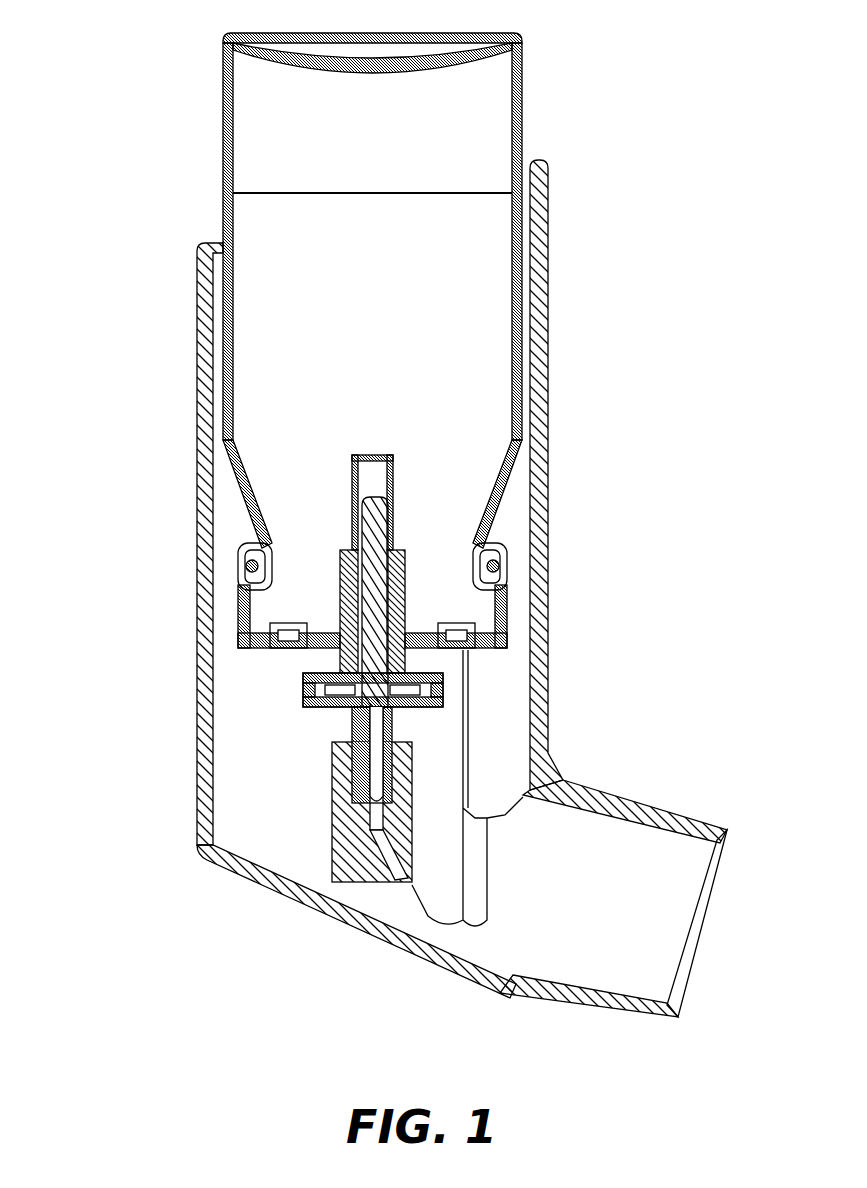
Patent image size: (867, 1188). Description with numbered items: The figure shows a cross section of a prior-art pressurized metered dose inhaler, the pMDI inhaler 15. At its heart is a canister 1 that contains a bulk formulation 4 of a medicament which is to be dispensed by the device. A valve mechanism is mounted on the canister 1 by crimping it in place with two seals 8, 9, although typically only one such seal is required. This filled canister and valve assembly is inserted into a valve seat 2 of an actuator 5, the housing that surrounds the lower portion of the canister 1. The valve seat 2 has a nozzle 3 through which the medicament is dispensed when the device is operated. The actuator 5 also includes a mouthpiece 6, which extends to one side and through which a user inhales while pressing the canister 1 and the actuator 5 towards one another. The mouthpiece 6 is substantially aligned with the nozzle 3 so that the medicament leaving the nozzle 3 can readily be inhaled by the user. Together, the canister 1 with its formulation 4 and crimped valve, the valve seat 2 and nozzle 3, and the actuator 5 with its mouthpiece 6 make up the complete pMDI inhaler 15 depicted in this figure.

The pMDI inhaler 15 is at (398, 525).
The canister 1 is at (225, 328).
The valve seat 2 is at (342, 774).
The nozzle 3 is at (382, 832).
The bulk formulation 4 is at (493, 265).
The actuator 5 is at (538, 542).
The mouthpiece 6 is at (643, 808).
The seal 8 is at (500, 580).
The seal 9 is at (480, 637).